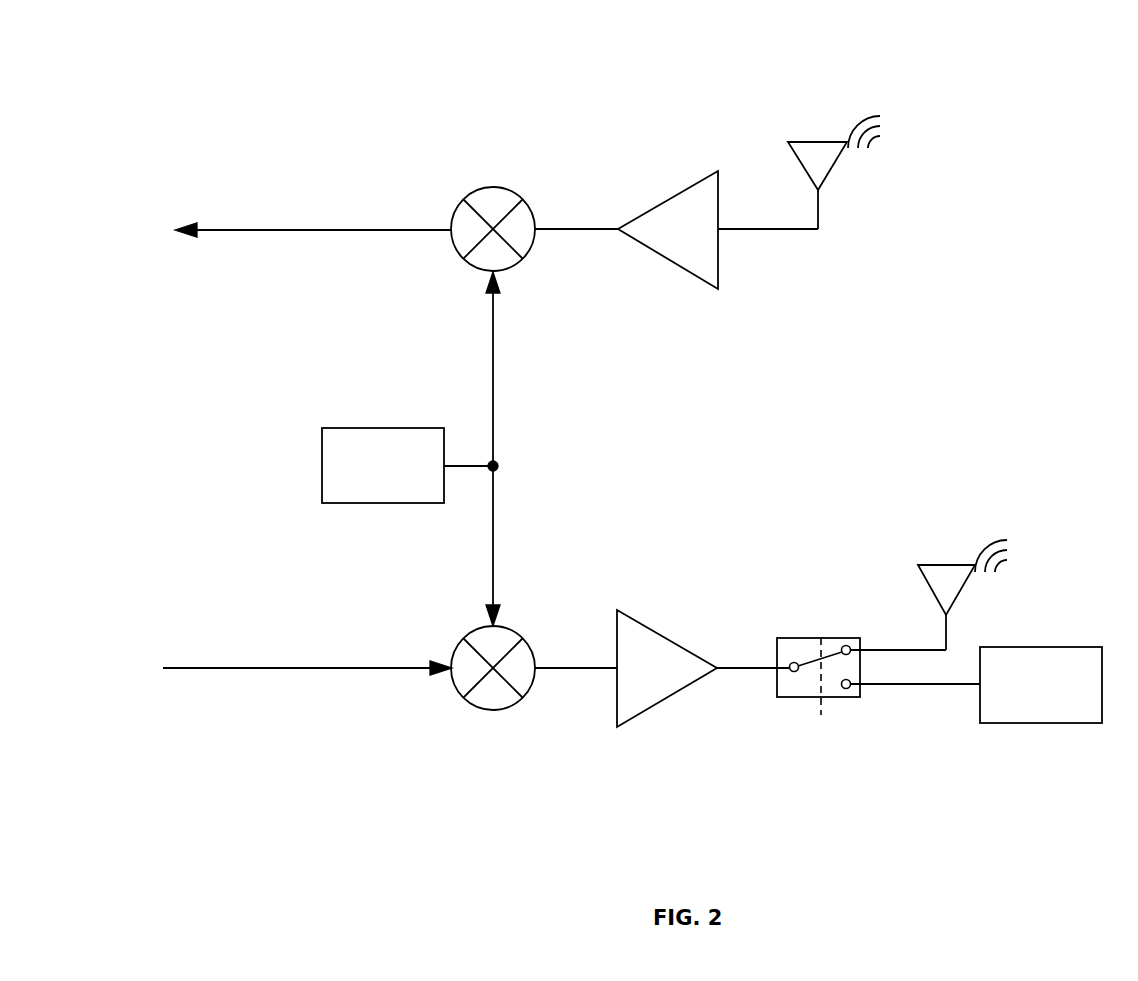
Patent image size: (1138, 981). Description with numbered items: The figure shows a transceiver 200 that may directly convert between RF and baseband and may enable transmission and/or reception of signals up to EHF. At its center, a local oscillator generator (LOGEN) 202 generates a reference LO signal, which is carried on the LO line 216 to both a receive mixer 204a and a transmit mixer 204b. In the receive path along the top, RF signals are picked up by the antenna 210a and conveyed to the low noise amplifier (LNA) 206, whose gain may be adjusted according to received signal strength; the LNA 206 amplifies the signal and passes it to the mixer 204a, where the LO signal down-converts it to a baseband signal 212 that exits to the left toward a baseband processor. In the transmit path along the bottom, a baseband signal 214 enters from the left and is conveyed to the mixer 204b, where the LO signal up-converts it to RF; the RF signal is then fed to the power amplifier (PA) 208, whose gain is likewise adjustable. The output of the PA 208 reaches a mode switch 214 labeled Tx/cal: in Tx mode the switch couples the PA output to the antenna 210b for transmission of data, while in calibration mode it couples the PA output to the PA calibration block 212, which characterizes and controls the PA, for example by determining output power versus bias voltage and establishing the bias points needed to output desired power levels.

The transceiver 200 is at (108, 78).
The local oscillator generator (LOGEN) 202 is at (408, 428).
The mixer 204a is at (484, 189).
The mixer 204b is at (468, 634).
The low noise amplifier (LNA) 206 is at (669, 199).
The power amplifier (PA) 208 is at (642, 625).
The antenna 210a is at (790, 142).
The antenna 210b is at (930, 565).
The PA calibration block 212 is at (335, 229).
The mode switch 214 is at (330, 667).
The LO signal line 216 is at (495, 447).